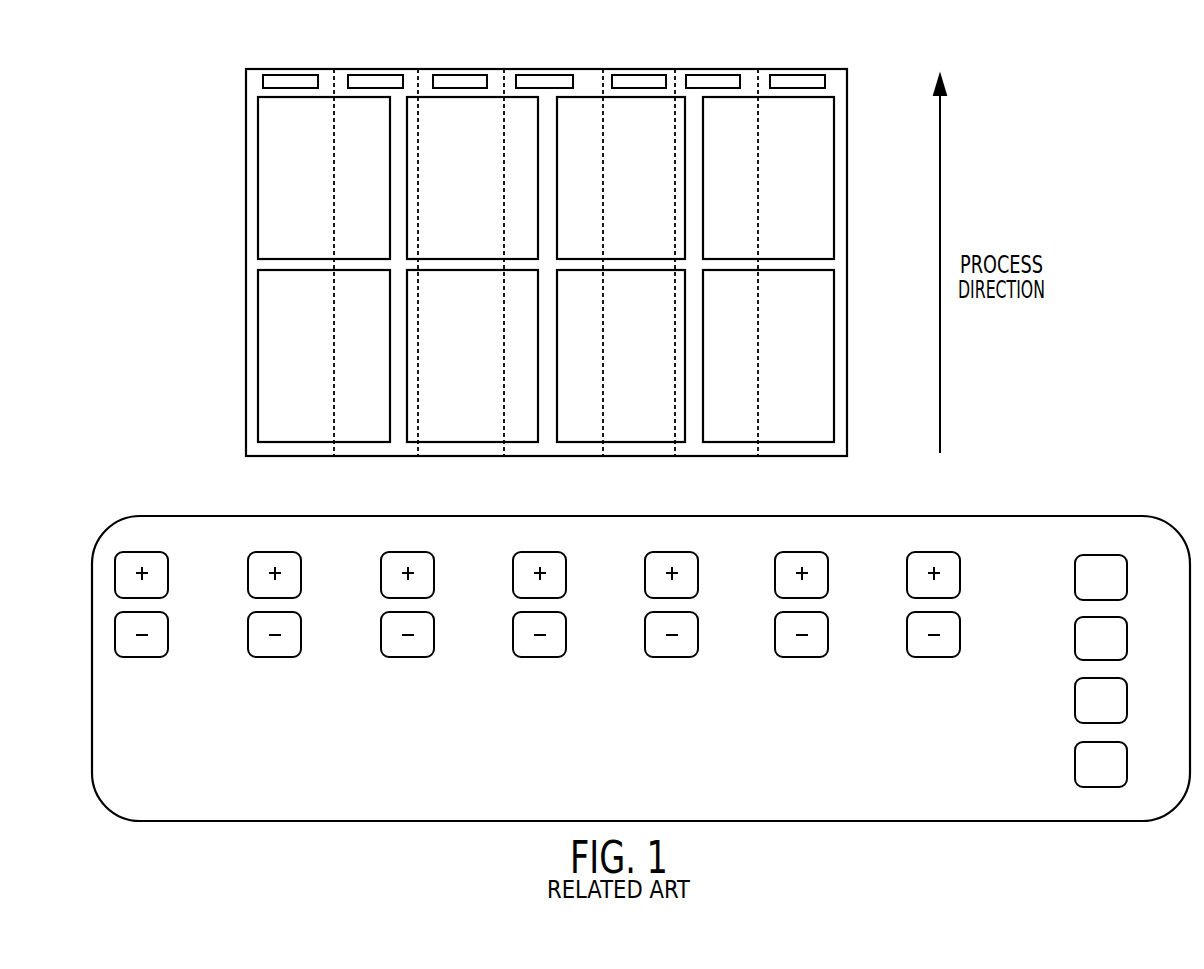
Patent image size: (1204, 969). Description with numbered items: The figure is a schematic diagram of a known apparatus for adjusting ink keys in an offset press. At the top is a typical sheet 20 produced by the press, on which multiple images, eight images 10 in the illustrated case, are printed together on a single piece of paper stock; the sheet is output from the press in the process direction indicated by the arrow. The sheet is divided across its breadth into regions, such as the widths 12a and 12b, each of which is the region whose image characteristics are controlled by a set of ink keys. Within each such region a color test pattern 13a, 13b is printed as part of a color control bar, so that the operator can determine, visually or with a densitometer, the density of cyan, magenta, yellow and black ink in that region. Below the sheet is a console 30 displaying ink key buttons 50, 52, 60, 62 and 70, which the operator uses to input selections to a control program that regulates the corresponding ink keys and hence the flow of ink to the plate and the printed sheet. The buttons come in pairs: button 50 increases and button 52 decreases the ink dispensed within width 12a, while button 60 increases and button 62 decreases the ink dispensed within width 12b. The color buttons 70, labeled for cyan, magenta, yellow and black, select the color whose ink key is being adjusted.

The image 10 is at (255, 281).
The width 12a is at (332, 60).
The width 12b is at (420, 60).
The color test pattern 13a is at (263, 81).
The color test pattern 13b is at (348, 81).
The sheet 20 is at (847, 200).
The console 30 is at (92, 665).
The ink key button 50 is at (143, 550).
The ink key button 52 is at (156, 658).
The ink key button 60 is at (277, 550).
The ink key button 62 is at (290, 658).
The ink key button 70 is at (1127, 577).